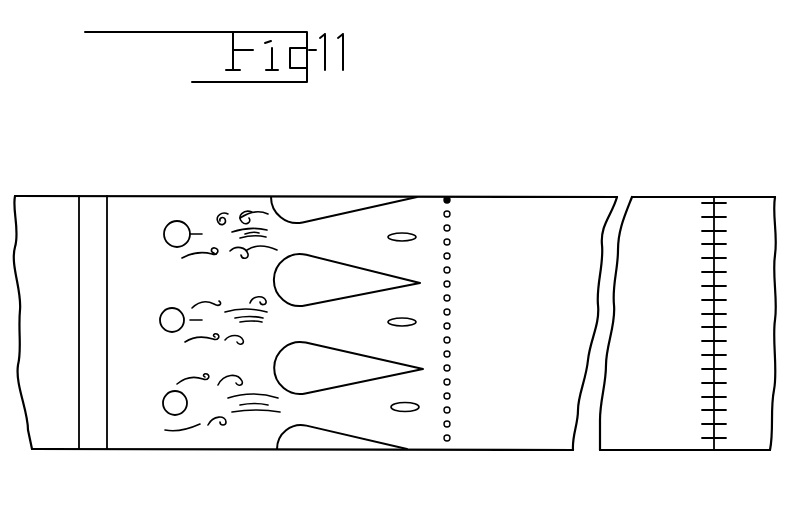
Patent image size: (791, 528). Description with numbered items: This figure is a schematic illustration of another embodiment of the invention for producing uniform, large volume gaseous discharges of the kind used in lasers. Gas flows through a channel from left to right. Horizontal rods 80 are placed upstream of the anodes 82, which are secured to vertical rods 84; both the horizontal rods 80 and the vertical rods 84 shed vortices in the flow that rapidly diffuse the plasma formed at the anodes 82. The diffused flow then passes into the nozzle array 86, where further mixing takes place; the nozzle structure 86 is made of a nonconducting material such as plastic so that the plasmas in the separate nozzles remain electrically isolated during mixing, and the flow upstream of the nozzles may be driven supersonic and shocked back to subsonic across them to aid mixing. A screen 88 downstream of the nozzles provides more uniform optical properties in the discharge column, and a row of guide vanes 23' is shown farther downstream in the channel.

The horizontal rods 80 is at (90, 438).
The anodes 82 is at (190, 234).
The vertical rods 84 is at (168, 308).
The nozzle array 86 is at (365, 212).
The screen 88 is at (447, 200).
The seam line 23' is at (723, 291).